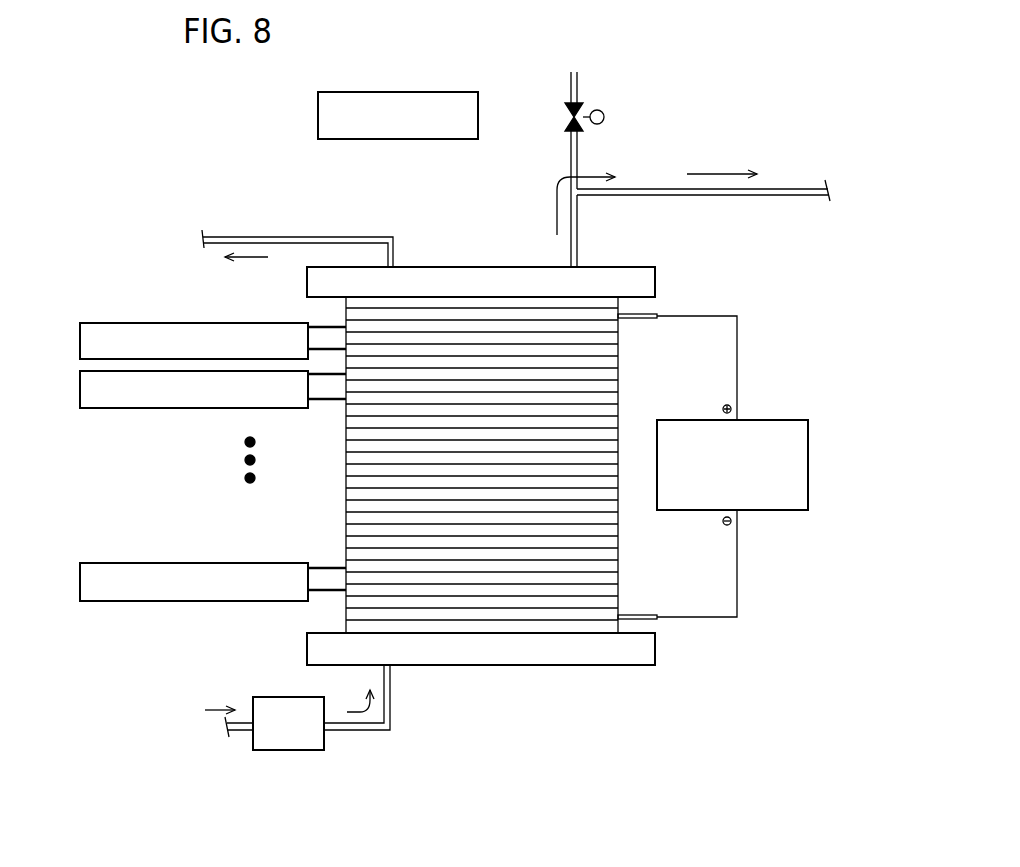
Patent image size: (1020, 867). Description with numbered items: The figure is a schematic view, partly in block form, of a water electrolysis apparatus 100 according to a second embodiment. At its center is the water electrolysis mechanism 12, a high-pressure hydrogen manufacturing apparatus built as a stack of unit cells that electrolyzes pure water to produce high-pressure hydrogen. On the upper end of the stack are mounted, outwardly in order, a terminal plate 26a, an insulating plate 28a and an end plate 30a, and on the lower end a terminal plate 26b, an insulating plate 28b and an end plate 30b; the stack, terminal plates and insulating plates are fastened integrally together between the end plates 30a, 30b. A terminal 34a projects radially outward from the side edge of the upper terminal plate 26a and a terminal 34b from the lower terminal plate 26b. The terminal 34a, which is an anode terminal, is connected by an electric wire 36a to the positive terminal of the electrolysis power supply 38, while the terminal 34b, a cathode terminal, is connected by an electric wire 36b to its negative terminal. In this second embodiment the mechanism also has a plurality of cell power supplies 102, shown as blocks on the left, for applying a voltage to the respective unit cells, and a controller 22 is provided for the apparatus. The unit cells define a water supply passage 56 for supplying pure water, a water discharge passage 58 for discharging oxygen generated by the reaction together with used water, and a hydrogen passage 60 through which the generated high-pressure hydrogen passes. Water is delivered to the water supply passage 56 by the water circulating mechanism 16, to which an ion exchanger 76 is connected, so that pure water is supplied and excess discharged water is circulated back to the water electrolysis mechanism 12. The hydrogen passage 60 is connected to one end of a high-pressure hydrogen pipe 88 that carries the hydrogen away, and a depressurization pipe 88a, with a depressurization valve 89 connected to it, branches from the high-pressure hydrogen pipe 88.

The water electrolysis apparatus 100 is at (265, 115).
The controller 22 is at (460, 92).
The water electrolysis mechanism 12 is at (504, 445).
The end plate 30a is at (631, 265).
The end plate 30b is at (629, 668).
The insulating plate 28a is at (476, 303).
The terminal plate 26a is at (500, 316).
The insulating plate 28b is at (477, 628).
The terminal plate 26b is at (498, 615).
The terminal 34a is at (639, 321).
The terminal 34b is at (637, 615).
The electric wire 36a is at (735, 329).
The electric wire 36b is at (735, 560).
The electrolysis power supply 38 is at (753, 420).
The water discharge passage 58 is at (396, 265).
The hydrogen passage 60 is at (568, 264).
The depressurization pipe 88a is at (570, 158).
The high-pressure hydrogen pipe 88 is at (780, 188).
The depressurization valve 89 is at (562, 117).
The cell power supply 102 is at (79, 335).
The ion exchanger 76 is at (268, 697).
The water supply passage 56 is at (393, 668).
The water circulating mechanism 16 is at (315, 726).